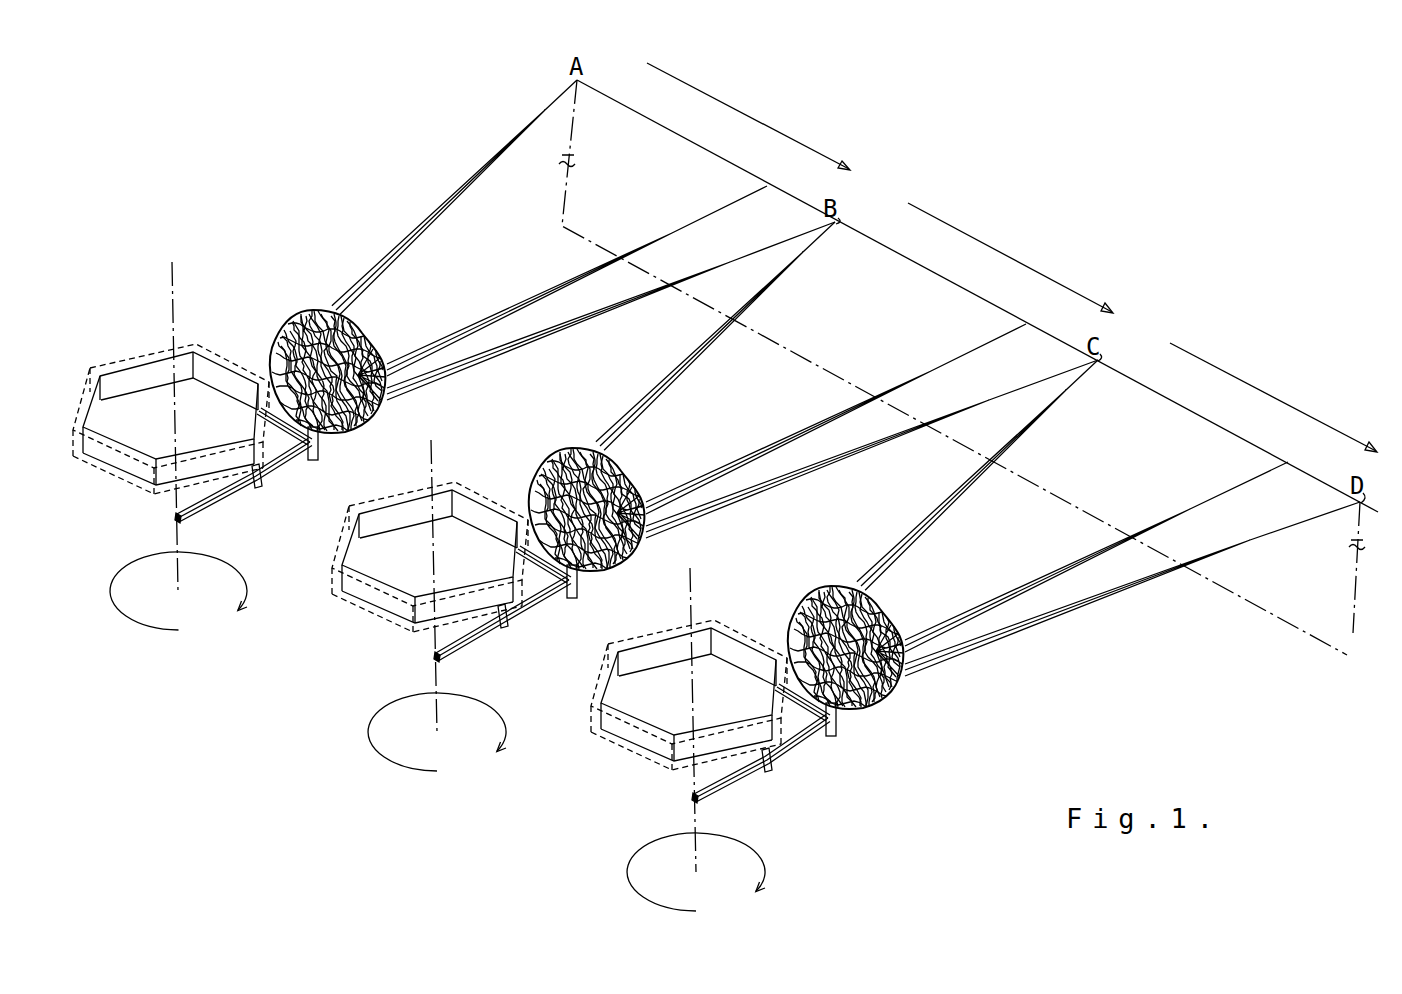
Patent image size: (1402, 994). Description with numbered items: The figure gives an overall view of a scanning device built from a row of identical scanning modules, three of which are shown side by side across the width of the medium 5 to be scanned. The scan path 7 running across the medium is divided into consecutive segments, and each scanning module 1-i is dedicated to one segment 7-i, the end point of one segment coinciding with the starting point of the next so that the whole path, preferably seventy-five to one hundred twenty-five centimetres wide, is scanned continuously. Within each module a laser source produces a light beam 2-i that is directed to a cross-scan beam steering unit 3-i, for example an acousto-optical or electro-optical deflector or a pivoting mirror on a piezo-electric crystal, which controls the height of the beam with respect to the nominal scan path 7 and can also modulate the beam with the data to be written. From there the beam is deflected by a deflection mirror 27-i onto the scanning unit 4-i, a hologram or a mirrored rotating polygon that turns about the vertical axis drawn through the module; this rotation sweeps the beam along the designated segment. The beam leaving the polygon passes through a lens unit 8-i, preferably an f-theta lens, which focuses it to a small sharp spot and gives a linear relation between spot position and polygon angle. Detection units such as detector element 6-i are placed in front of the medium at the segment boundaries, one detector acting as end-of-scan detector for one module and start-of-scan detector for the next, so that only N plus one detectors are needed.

The scanning module 1-i is at (173, 298).
The scanning unit 4-i is at (113, 368).
The light beam 2-i is at (439, 226).
The cross-scan beam steering unit 3-i is at (262, 484).
The deflection mirror 27-i is at (322, 442).
The lens unit 8-i is at (357, 338).
The detection unit 6-i is at (800, 246).
The scan path 7 is at (872, 233).
The segment of the scan path 7-i is at (668, 131).
The medium 5 is at (1092, 504).